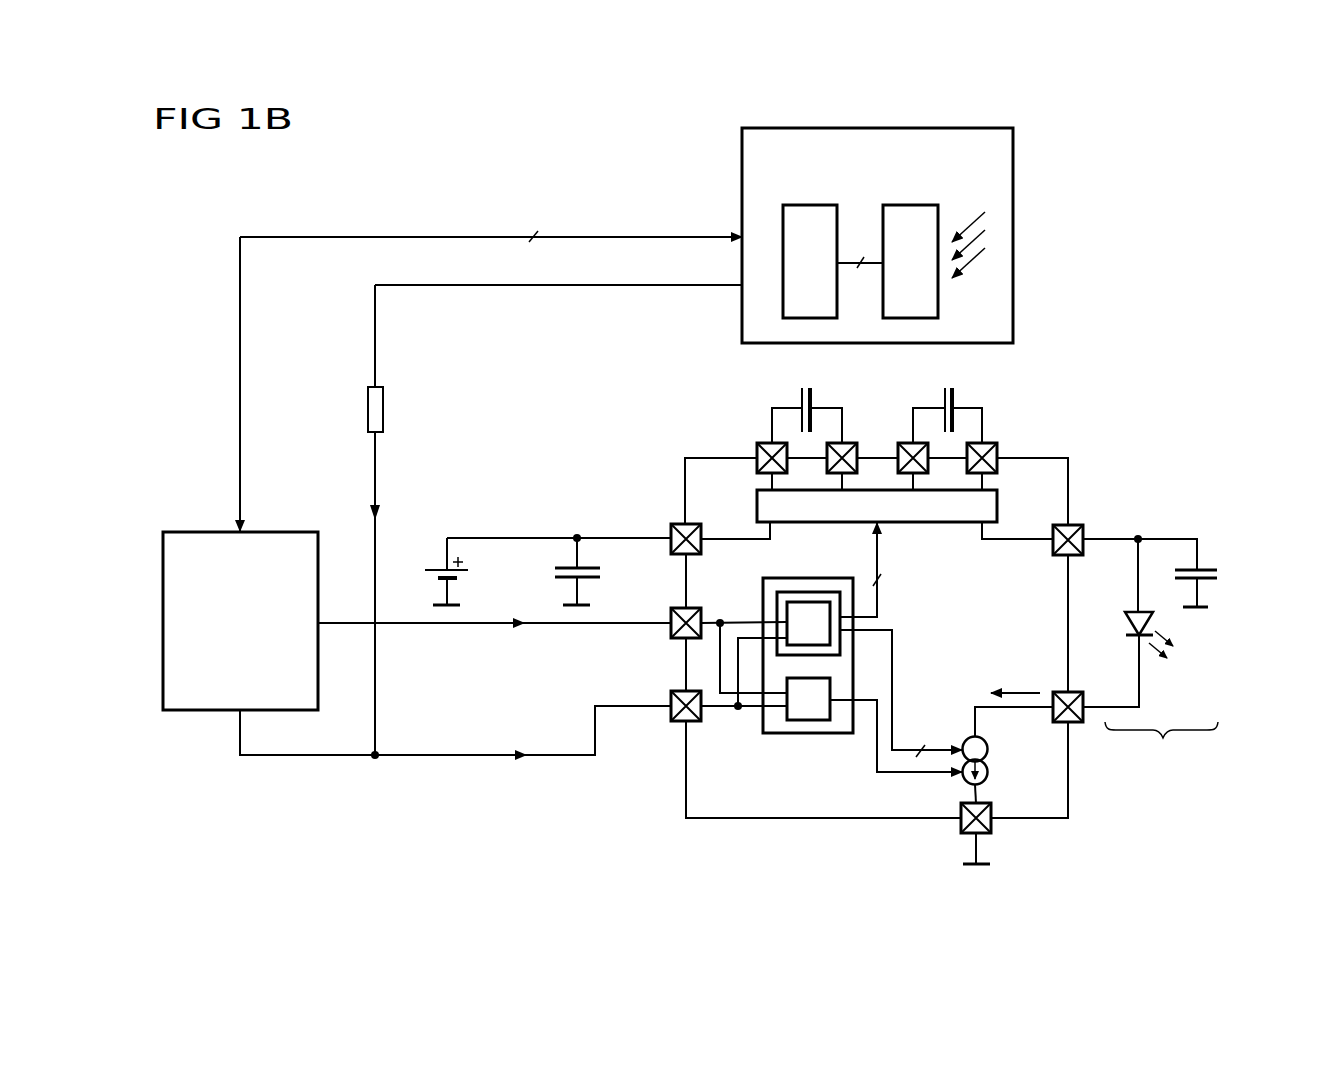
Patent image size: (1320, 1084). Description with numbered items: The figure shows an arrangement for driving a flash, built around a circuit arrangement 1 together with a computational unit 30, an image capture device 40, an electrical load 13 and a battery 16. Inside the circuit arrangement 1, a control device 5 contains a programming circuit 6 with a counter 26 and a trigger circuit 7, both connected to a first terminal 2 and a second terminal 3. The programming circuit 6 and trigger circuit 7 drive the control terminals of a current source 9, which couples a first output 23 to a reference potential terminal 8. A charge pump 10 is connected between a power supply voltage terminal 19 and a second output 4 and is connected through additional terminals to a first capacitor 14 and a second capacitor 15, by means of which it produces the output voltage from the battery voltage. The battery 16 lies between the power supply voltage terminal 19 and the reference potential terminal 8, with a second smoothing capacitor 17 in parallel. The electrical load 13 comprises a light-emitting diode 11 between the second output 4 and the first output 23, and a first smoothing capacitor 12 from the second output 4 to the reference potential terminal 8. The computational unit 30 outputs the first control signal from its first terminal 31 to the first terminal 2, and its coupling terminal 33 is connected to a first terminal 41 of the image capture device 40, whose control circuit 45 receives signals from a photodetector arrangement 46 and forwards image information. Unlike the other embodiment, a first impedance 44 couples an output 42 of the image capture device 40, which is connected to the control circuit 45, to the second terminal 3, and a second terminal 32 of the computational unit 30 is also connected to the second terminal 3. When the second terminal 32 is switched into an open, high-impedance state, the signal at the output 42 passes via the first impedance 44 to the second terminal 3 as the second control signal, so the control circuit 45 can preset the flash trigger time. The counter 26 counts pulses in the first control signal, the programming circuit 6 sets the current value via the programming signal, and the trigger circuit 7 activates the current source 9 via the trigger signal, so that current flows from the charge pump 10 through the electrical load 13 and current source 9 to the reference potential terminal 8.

The circuit arrangement 1 is at (820, 818).
The first terminal 2 is at (697, 607).
The second terminal 3 is at (690, 722).
The second output 4 is at (1075, 525).
The control device 5 is at (765, 734).
The programming circuit 6 is at (812, 592).
The trigger circuit 7 is at (808, 722).
The reference potential terminal 8 is at (438, 605).
The current source 9 is at (988, 772).
The charge pump 10 is at (997, 505).
The light-emitting diode 11 is at (1130, 624).
The first smoothing capacitor 12 is at (1217, 574).
The electrical load 13 is at (1161, 748).
The first capacitor 14 is at (800, 396).
The second capacitor 15 is at (942, 396).
The battery 16 is at (443, 570).
The second smoothing capacitor 17 is at (600, 572).
The power supply voltage terminal 19 is at (678, 524).
The first output 23 is at (1060, 692).
The counter 26 is at (787, 610).
The computational unit 30 is at (203, 532).
The first terminal 31 is at (320, 625).
The second terminal 32 is at (240, 712).
The coupling terminal 33 is at (245, 530).
The image capture device 40 is at (1013, 240).
The first terminal 41 is at (742, 237).
The output 42 is at (742, 285).
The first impedance 44 is at (383, 410).
The control circuit 45 is at (810, 205).
The photodetector arrangement 46 is at (910, 205).